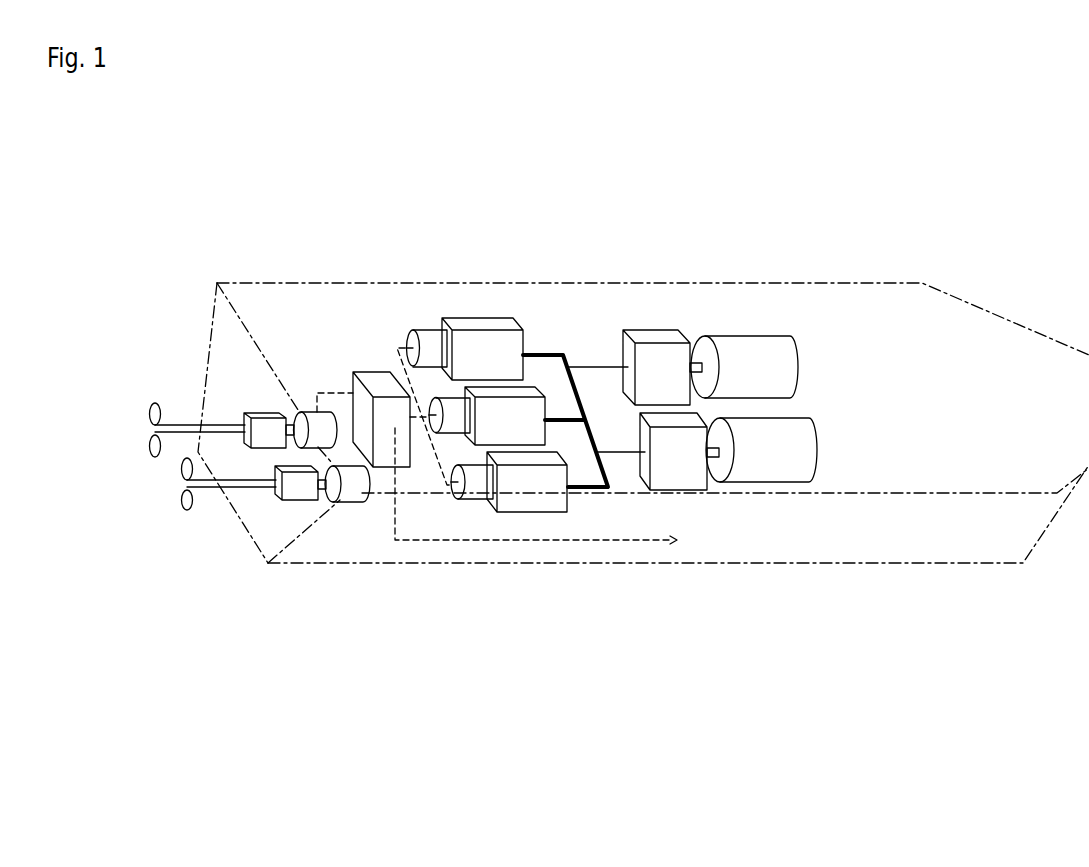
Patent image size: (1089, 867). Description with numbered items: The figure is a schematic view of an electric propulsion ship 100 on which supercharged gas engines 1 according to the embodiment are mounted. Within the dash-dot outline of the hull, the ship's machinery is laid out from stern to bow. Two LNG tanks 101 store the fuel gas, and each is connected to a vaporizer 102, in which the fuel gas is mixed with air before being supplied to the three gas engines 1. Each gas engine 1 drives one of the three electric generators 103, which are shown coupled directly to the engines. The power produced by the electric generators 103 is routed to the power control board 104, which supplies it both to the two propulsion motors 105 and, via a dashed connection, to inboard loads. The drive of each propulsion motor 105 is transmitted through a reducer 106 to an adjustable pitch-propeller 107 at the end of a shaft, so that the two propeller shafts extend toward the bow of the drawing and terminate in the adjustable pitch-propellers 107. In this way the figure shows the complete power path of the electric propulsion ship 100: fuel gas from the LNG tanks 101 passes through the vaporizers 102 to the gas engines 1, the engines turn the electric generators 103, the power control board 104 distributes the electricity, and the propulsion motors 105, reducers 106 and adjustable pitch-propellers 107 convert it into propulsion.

The gas engine 1 is at (486, 323).
The electric propulsion ship 100 is at (643, 384).
The LNG tank 101 is at (800, 368).
The vaporizer 102 is at (653, 330).
The electric generator 103 is at (427, 330).
The power control board 104 is at (363, 372).
The propulsion motor 105 is at (302, 412).
The reducer 106 is at (258, 415).
The adjustable pitch-propeller 107 is at (154, 403).